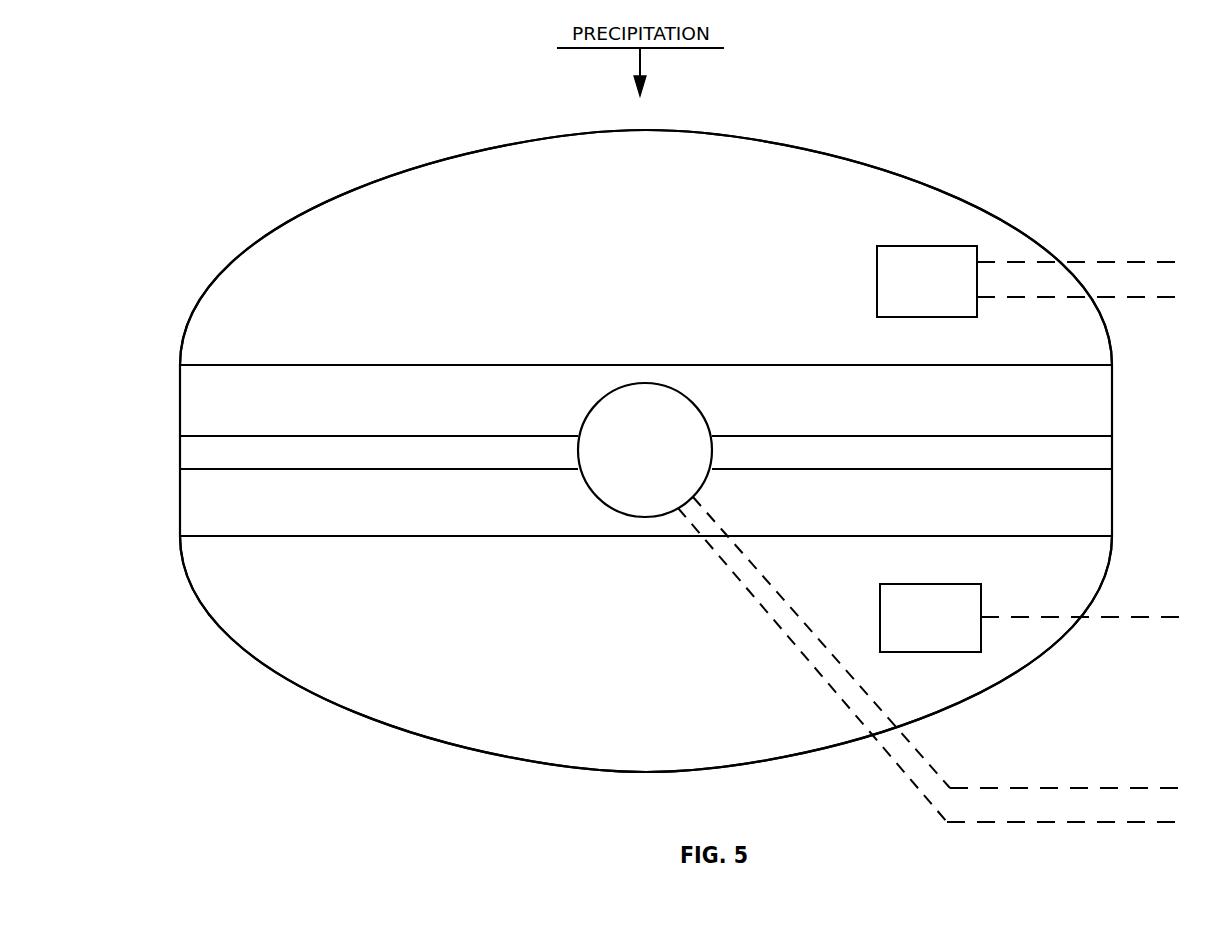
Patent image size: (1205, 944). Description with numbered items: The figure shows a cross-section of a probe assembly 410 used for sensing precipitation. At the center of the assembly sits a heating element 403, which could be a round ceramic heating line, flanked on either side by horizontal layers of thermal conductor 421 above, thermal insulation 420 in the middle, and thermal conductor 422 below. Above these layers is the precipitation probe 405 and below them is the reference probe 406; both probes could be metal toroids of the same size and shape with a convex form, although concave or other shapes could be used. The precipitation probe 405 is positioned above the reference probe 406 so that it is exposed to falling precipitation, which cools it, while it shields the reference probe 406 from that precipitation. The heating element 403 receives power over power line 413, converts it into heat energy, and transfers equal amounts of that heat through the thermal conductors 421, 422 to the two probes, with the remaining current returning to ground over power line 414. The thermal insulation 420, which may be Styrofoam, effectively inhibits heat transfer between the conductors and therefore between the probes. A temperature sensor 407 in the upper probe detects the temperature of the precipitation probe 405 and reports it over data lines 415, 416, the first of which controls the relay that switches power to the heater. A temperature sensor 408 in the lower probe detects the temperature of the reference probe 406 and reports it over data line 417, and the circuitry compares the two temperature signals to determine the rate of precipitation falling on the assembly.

The probe assembly 410 is at (1008, 125).
The precipitation probe 405 is at (646, 247).
The reference probe 406 is at (646, 654).
The thermal conductor 421 is at (646, 400).
The thermal insulation 420 is at (646, 452).
The thermal conductor 422 is at (646, 502).
The heating element 403 is at (645, 450).
The temperature sensor 407 is at (927, 281).
The temperature sensor 408 is at (930, 618).
The data line 415 is at (1113, 263).
The data line 416 is at (1117, 297).
The data line 417 is at (1120, 617).
The power line 413 is at (1105, 788).
The power line 414 is at (1105, 825).